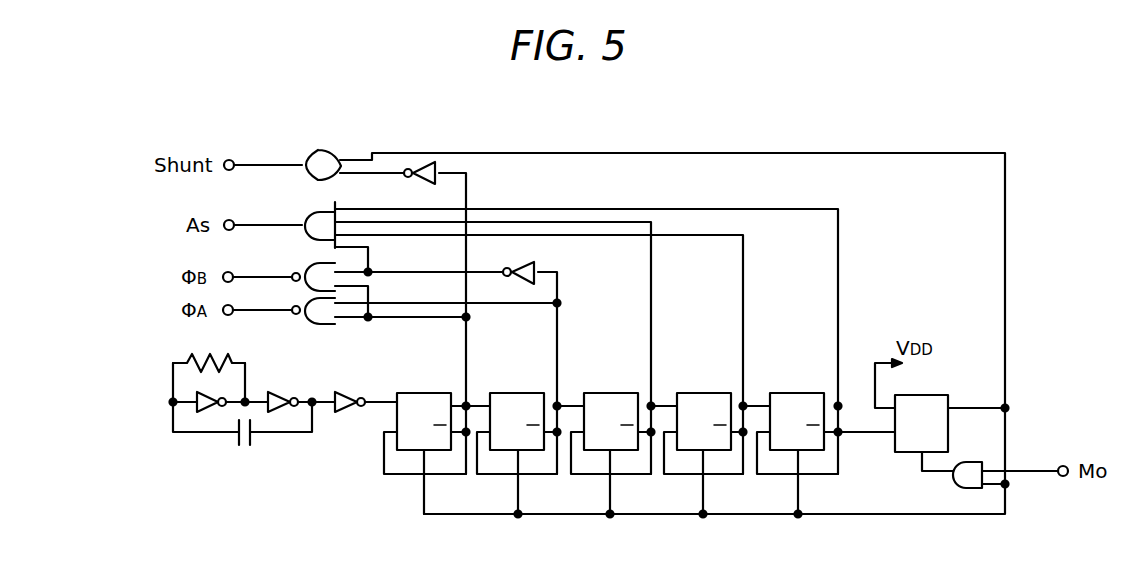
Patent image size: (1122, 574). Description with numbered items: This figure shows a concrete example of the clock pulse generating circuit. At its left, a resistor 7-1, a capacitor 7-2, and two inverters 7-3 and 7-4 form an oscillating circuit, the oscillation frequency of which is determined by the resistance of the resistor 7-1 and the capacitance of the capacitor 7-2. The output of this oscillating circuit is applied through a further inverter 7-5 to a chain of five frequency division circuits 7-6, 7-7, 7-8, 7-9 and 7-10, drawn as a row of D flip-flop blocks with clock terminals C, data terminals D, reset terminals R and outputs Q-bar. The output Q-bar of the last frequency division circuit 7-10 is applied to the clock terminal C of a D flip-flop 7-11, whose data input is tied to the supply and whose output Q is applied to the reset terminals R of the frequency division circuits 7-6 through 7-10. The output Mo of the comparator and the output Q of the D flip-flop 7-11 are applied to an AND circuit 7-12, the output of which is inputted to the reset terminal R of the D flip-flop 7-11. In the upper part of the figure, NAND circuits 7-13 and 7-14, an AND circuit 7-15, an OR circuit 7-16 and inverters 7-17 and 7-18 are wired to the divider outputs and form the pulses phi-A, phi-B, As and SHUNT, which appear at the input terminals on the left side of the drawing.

The resistor 7-1 is at (215, 355).
The capacitor 7-2 is at (245, 445).
The inverter 7-3 is at (203, 412).
The inverter 7-4 is at (273, 392).
The inverter 7-5 is at (350, 392).
The frequency division circuit 7-6 is at (403, 450).
The frequency division circuit 7-7 is at (507, 450).
The frequency division circuit 7-8 is at (600, 450).
The frequency division circuit 7-9 is at (693, 450).
The frequency division circuit 7-10 is at (785, 450).
The D flip-flop 7-11 is at (908, 452).
The AND circuit 7-12 is at (972, 488).
The NAND circuit 7-13 is at (313, 324).
The NAND circuit 7-14 is at (307, 263).
The AND circuit 7-15 is at (307, 210).
The OR circuit 7-16 is at (323, 150).
The inverter 7-17 is at (440, 164).
The inverter 7-18 is at (535, 266).